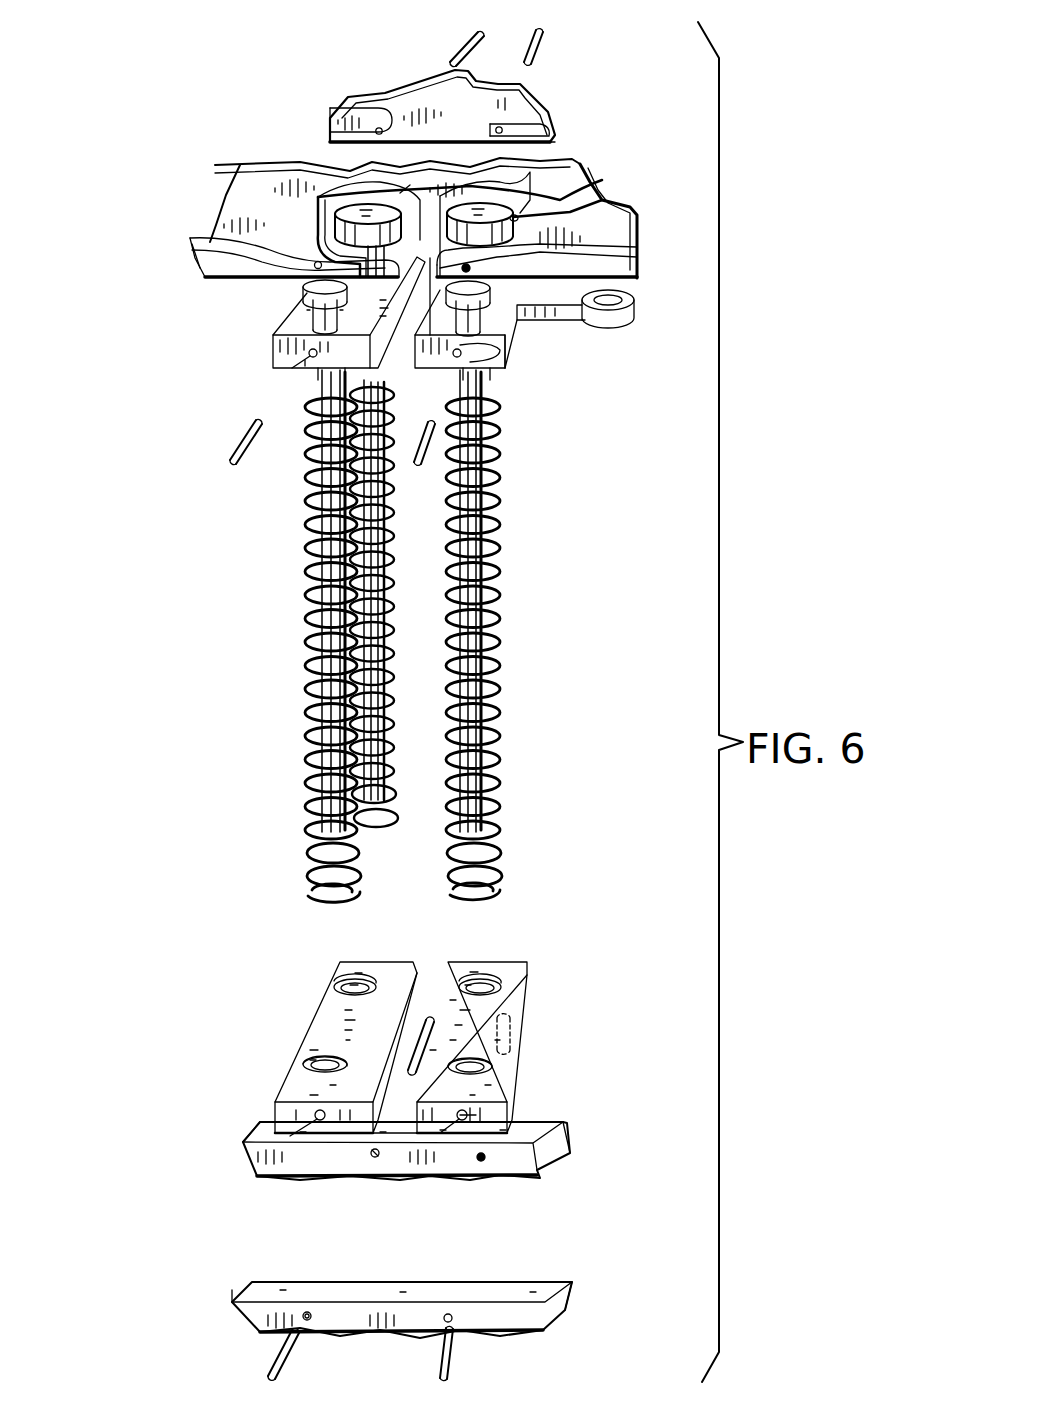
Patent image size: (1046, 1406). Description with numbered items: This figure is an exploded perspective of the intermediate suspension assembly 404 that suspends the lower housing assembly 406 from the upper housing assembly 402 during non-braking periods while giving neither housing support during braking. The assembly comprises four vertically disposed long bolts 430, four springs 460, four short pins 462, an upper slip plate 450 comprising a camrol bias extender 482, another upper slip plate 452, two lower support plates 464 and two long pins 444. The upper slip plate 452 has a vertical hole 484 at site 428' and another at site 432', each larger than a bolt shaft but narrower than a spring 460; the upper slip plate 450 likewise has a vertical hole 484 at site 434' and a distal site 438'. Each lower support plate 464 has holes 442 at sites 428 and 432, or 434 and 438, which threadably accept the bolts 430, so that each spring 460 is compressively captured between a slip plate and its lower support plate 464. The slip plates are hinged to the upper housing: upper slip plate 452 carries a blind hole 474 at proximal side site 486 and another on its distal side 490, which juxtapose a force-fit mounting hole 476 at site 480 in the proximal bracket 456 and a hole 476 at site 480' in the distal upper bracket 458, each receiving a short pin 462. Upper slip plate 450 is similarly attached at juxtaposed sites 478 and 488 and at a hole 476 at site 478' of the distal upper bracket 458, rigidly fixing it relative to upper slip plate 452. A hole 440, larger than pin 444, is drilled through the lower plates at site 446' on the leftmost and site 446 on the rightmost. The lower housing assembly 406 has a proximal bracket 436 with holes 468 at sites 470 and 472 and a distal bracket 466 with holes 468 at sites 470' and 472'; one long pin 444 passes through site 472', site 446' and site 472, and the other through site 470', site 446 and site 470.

The upper housing assembly 402 is at (538, 92).
The intermediate suspension assembly 404 is at (250, 630).
The lower housing assembly 406 is at (545, 1165).
The site 428 is at (348, 751).
The site 428' is at (329, 308).
The long bolt 430 is at (340, 198).
The site 432 is at (369, 957).
The site 432' is at (348, 210).
The site 434 is at (508, 1047).
The site 434' is at (548, 346).
The proximal bracket 436 is at (232, 1312).
The site 438 is at (489, 957).
The site 438' is at (606, 212).
The hole 440 is at (345, 1002).
The hole 442 is at (360, 980).
The long pin 444 is at (440, 1015).
The site 446 is at (514, 1127).
The site 446' is at (227, 1141).
The upper slip plate 450 is at (520, 342).
The upper slip plate 452 is at (305, 351).
The proximal bracket 456 is at (600, 160).
The distal upper bracket 458 is at (555, 150).
The spring 460 is at (498, 492).
The short pin 462 is at (530, 52).
The lower support plate 464 is at (540, 1100).
The distal bracket 466 is at (570, 1135).
The hole 468 is at (388, 1168).
The site 470 is at (581, 1284).
The site 470' is at (536, 1185).
The site 472 is at (246, 1326).
The site 472' is at (392, 1192).
The blind hole 474 is at (298, 370).
The mounting hole 476 is at (355, 132).
The site 478 is at (604, 222).
The site 478' is at (549, 111).
The site 480 is at (179, 246).
The site 480' is at (309, 105).
The camrol bias extender 482 is at (612, 312).
The vertical hole 484 is at (272, 336).
The site 486 is at (300, 360).
The site 488 is at (495, 360).
The distal side 490 is at (426, 182).